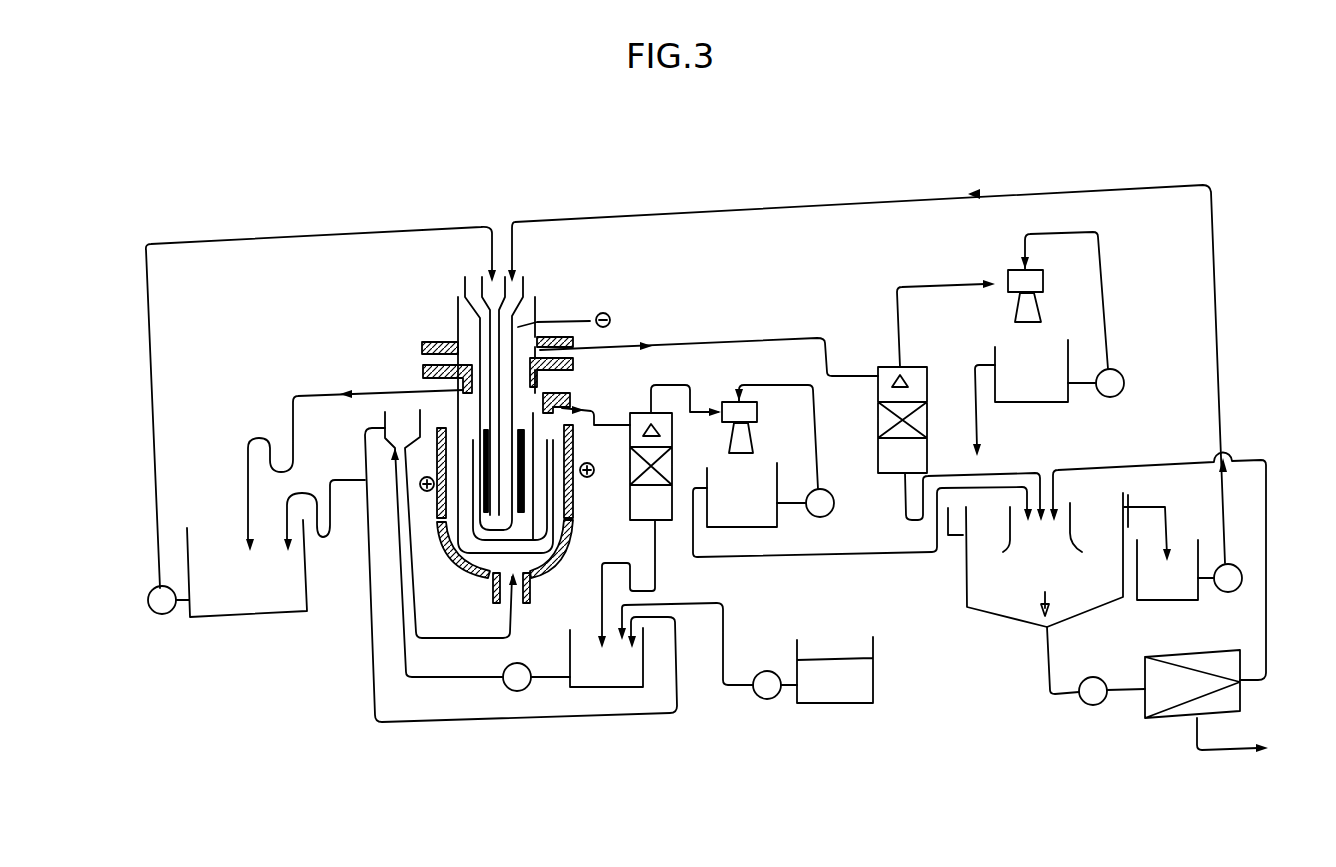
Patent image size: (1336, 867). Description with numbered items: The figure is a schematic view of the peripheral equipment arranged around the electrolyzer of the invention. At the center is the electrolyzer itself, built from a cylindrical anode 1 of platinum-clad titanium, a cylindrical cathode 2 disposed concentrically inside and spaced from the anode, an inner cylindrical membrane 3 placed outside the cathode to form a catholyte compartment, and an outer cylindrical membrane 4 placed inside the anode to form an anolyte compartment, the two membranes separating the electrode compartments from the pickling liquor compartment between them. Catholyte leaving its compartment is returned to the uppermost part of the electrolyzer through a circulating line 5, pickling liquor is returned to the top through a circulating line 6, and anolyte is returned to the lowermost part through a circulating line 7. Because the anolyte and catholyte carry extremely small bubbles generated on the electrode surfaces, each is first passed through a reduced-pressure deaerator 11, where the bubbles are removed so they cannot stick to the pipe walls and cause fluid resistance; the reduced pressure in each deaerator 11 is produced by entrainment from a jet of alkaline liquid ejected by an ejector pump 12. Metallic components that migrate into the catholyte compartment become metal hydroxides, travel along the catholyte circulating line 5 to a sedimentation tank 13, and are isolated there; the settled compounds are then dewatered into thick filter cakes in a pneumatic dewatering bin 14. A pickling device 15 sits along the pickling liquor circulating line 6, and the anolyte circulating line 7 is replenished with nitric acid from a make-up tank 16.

The cylindrical anode 1 is at (578, 492).
The cylindrical cathode 2 is at (483, 457).
The inner cylindrical membrane 3 is at (438, 500).
The outer cylindrical membrane 4 is at (450, 548).
The catholyte circulating line 5 is at (936, 195).
The pickling liquor circulating line 6 is at (287, 237).
The anolyte circulating line 7 is at (445, 724).
The reduced-pressure deaerator 11 is at (657, 412).
The ejector pump 12 is at (757, 437).
The sedimentation tank 13 is at (965, 588).
The pneumatic dewatering bin 14 is at (1145, 702).
The pickling device 15 is at (238, 620).
The make-up tank 16 is at (838, 705).